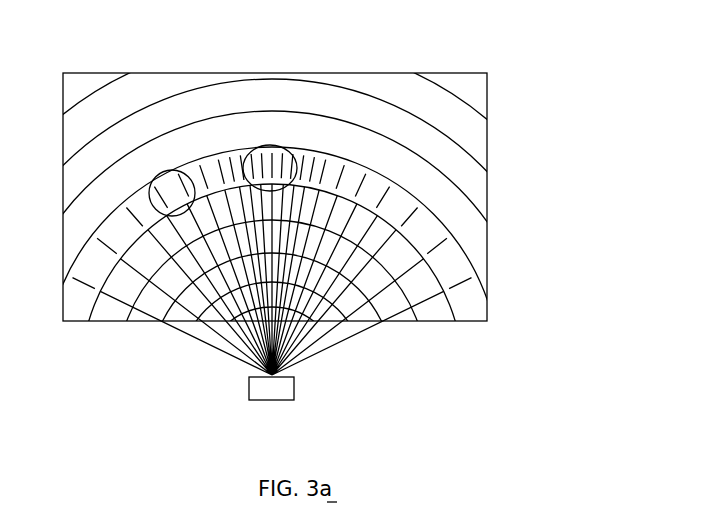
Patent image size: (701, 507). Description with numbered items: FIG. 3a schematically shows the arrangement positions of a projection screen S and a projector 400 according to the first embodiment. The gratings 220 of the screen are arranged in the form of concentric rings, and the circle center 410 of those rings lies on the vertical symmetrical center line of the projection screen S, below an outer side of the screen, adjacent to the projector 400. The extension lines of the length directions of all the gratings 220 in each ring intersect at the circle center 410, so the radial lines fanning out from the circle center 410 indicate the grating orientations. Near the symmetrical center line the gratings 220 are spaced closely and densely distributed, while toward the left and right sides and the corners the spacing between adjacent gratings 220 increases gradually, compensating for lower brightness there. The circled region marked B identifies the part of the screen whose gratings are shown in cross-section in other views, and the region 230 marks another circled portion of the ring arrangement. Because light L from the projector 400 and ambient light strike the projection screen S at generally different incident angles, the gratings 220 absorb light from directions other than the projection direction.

The projection screen S is at (68, 133).
The gratings 220 is at (343, 178).
The sampling region 230 is at (162, 172).
The part B is at (284, 145).
The projector 400 is at (286, 388).
The circle center 410 is at (277, 374).